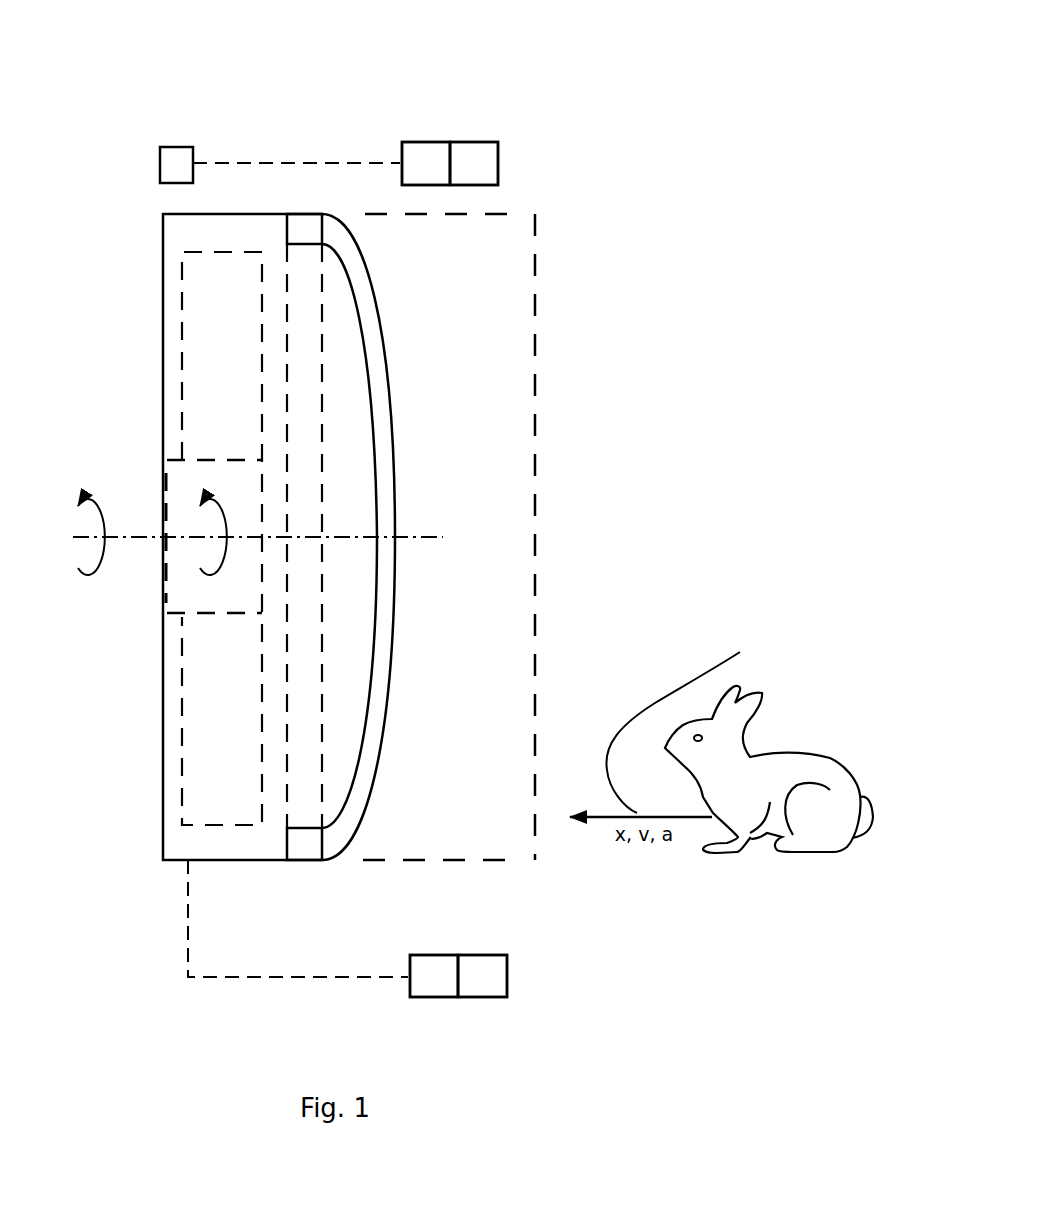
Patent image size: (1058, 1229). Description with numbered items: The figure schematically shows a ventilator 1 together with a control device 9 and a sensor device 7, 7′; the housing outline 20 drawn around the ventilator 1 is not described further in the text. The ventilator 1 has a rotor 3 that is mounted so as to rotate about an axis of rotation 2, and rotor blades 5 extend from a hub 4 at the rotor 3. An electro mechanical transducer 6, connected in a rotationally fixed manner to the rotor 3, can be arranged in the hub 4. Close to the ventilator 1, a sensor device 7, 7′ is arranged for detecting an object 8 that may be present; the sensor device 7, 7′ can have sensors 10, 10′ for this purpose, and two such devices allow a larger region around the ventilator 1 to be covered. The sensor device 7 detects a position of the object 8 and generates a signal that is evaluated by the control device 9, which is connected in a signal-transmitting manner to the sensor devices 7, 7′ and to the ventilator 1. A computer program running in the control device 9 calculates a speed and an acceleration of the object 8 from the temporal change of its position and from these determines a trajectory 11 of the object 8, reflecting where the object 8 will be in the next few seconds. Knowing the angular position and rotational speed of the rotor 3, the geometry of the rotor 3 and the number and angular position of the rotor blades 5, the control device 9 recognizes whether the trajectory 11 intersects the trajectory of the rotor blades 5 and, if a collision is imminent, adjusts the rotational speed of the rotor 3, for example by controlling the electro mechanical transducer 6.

The ventilator 1 is at (630, 68).
The axis of rotation 2 is at (420, 537).
The rotor 3 is at (276, 435).
The hub 4 is at (262, 505).
The rotor blades 5 is at (243, 370).
The electro mechanical transducer 6 is at (245, 588).
The sensor device 7 is at (498, 121).
The sensor device 7′ is at (543, 973).
The object 8 is at (808, 725).
The control device 9 is at (175, 133).
The sensor 10 is at (427, 142).
The sensor 10′ is at (498, 165).
The trajectory 11 is at (685, 720).
The housing 20 is at (535, 225).